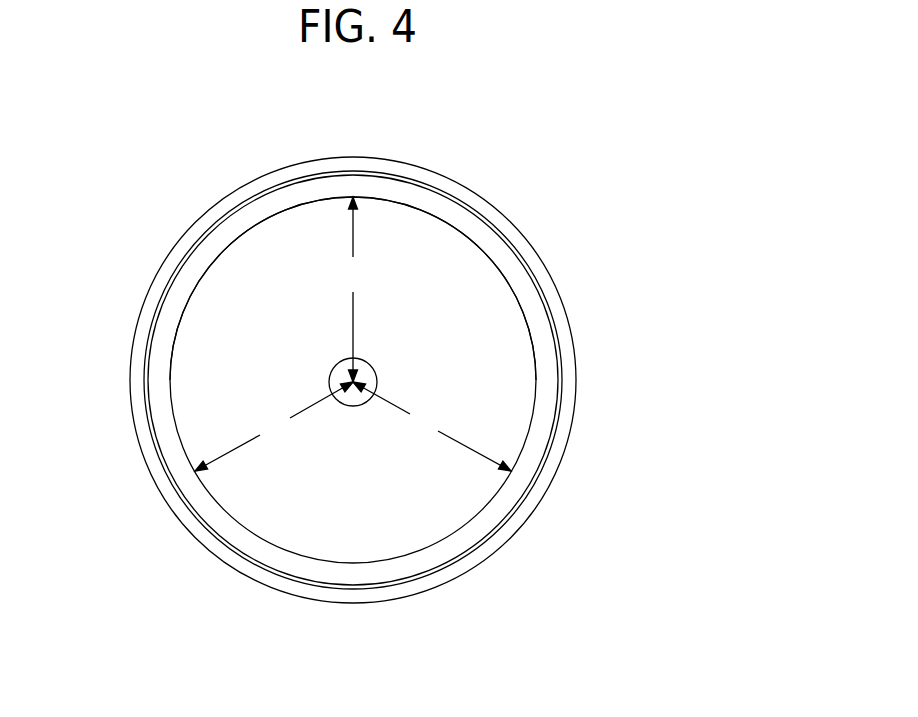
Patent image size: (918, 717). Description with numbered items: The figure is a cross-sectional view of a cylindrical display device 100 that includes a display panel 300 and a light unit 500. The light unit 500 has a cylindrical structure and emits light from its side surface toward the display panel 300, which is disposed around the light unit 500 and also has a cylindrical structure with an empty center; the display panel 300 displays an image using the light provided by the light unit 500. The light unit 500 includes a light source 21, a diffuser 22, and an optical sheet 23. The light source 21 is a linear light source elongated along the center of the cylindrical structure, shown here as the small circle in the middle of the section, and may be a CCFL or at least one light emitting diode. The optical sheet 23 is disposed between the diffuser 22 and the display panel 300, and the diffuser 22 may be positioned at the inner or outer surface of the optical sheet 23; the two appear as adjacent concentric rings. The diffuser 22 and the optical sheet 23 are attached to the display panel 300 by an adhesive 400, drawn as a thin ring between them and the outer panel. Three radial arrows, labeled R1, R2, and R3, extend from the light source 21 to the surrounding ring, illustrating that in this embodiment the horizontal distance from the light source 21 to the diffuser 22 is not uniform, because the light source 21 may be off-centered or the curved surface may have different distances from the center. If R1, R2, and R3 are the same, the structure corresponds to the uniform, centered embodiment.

The display device 100 is at (507, 210).
The display panel 300 is at (392, 170).
The adhesive 400 is at (308, 178).
The diffuser 22 is at (260, 207).
The optical sheet 23 is at (353, 288).
The light source 21 is at (347, 393).
The light unit 500 is at (87, 605).
The first distance R1 is at (352, 289).
The second distance R2 is at (274, 426).
The third distance R3 is at (432, 426).